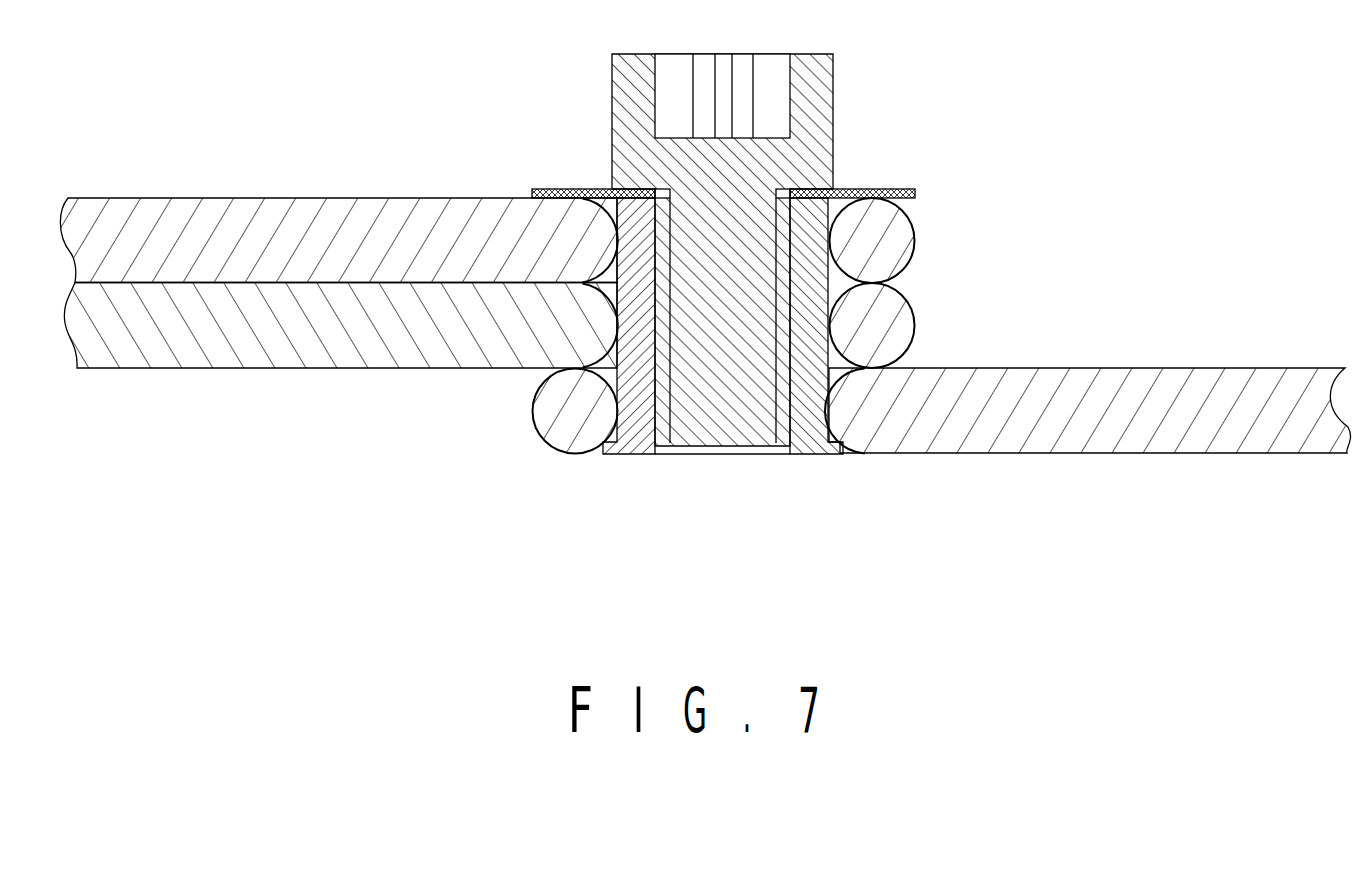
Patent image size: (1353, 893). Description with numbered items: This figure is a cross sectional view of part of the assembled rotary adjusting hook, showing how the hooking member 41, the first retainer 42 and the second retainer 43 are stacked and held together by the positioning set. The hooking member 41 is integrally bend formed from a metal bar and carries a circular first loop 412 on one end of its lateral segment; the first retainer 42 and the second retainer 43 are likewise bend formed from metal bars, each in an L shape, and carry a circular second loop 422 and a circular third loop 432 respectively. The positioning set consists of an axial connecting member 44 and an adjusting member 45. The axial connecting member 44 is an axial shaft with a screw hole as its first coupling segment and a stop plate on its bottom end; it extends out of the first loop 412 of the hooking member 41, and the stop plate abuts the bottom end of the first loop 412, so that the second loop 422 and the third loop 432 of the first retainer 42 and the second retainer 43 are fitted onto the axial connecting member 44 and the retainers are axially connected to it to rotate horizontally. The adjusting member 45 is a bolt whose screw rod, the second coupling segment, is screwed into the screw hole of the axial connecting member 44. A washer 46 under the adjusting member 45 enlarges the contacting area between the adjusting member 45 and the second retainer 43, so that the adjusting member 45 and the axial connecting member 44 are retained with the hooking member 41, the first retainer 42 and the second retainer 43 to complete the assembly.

The hooking member 41 is at (1241, 347).
The first retainer 42 is at (304, 391).
The second retainer 43 is at (322, 177).
The first loop 412 is at (553, 450).
The second loop 422 is at (892, 328).
The third loop 432 is at (897, 250).
The axial connecting member 44 is at (807, 423).
The adjusting member 45 is at (823, 118).
The washer 46 is at (875, 197).